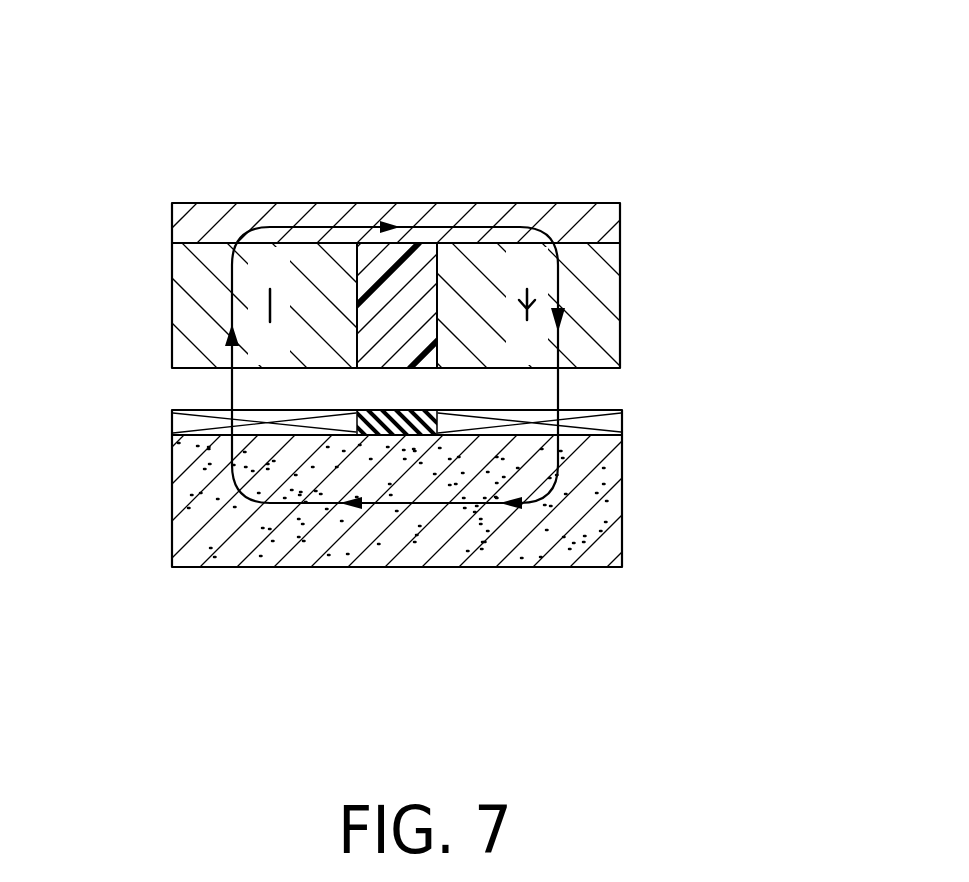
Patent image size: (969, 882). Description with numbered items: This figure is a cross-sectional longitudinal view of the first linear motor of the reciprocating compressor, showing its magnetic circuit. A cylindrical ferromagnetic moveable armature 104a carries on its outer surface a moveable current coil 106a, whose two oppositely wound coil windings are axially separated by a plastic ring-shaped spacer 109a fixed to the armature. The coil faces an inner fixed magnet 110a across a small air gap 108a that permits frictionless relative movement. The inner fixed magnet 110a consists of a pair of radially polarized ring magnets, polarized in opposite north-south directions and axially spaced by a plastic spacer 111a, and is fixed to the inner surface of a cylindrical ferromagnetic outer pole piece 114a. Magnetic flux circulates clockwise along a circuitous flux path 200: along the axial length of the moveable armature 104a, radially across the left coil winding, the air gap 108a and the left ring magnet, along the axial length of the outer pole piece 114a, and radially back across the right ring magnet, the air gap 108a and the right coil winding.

The inner fixed magnet 110a is at (322, 317).
The plastic spacer 111a is at (410, 262).
The outer pole piece 114a is at (592, 215).
The air gap 108a is at (605, 388).
The moveable armature 104a is at (607, 502).
The moveable current coil 106a is at (280, 427).
The ring-shaped spacer 109a is at (403, 437).
The flux path 200 is at (218, 388).